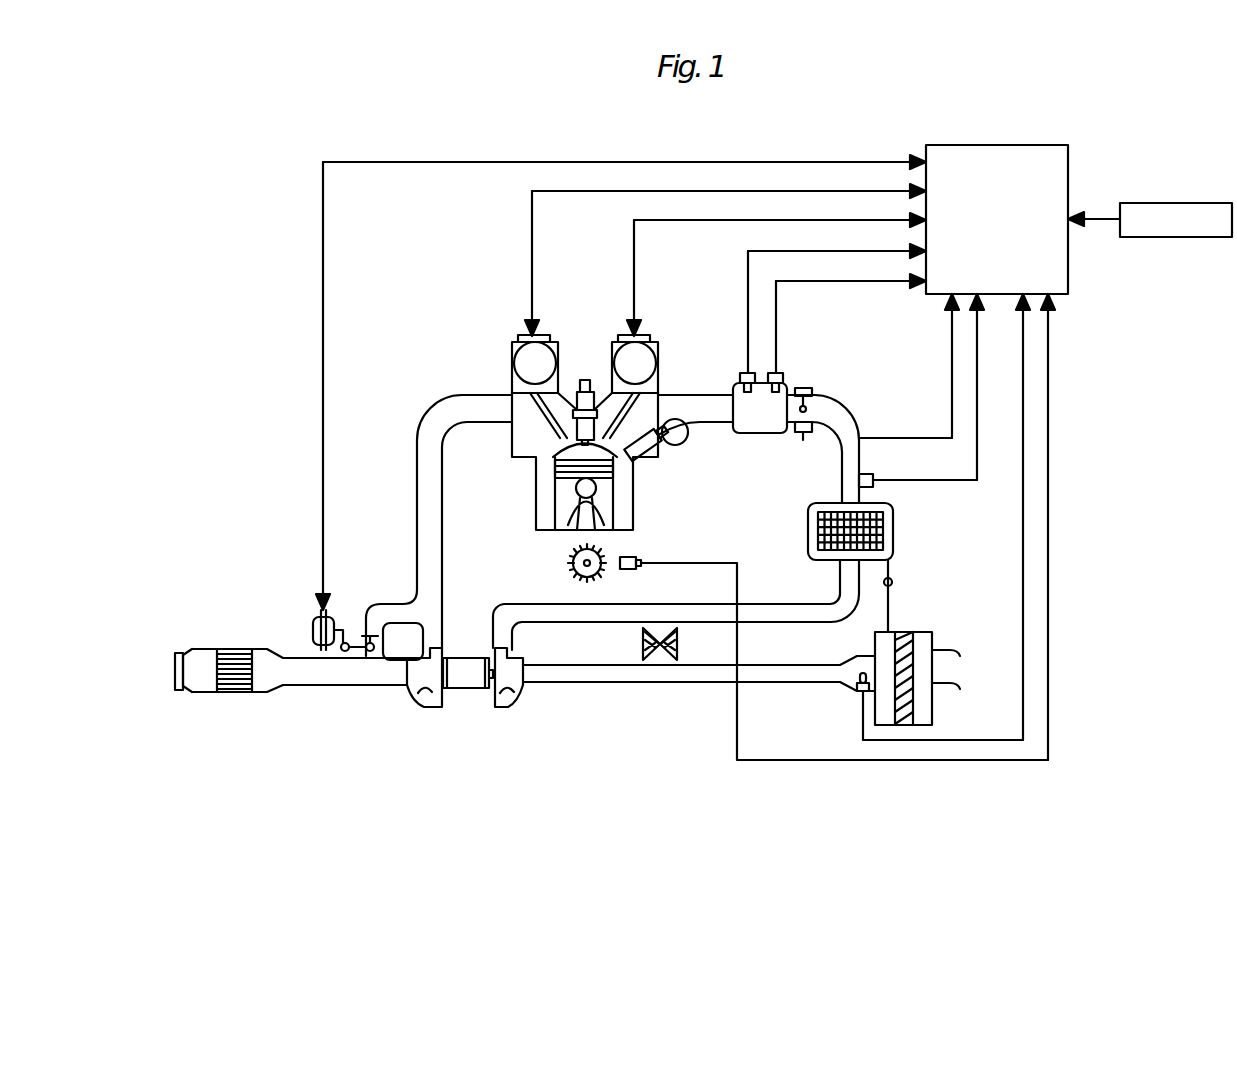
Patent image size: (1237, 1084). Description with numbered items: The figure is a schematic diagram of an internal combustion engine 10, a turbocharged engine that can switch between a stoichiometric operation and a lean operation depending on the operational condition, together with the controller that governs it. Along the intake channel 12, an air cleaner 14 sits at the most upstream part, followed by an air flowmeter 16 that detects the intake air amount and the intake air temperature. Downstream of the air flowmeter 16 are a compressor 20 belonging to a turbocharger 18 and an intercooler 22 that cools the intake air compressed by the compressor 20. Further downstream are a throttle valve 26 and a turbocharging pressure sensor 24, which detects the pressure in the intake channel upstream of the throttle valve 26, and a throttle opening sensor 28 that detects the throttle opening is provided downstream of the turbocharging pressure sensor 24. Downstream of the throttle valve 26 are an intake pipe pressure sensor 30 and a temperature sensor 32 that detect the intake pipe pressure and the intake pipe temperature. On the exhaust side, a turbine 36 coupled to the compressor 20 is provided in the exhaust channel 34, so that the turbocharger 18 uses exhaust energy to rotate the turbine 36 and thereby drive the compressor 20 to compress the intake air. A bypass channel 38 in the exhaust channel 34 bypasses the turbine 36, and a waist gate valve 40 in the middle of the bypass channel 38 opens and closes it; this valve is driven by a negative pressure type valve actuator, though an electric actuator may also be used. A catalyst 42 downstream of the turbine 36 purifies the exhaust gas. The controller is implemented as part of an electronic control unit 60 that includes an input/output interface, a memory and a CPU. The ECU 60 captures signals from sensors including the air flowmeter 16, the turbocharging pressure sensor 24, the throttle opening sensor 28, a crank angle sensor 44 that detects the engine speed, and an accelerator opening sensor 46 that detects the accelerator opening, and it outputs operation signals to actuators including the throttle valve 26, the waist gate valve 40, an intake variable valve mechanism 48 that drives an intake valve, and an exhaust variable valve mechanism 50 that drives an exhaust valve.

The internal combustion engine 10 is at (524, 487).
The intake channel 12 is at (602, 673).
The air cleaner 14 is at (933, 647).
The air flowmeter 16 is at (863, 700).
The turbocharger 18 is at (474, 710).
The compressor 20 is at (503, 685).
The intercooler 22 is at (895, 527).
The turbocharging pressure sensor 24 is at (873, 480).
The throttle valve 26 is at (813, 396).
The throttle opening sensor 28 is at (803, 440).
The intake pipe pressure sensor 30 is at (745, 374).
The temperature sensor 32 is at (780, 374).
The exhaust channel 34 is at (426, 420).
The turbine 36 is at (427, 690).
The bypass channel 38 is at (384, 623).
The waist gate valve (WGV) 40 is at (352, 631).
The catalyst 42 is at (232, 693).
The crank angle sensor 44 is at (644, 562).
The accelerator opening sensor 46 is at (1178, 203).
The intake variable valve mechanism 48 is at (628, 348).
The exhaust variable valve mechanism 50 is at (528, 348).
The electronic control unit (ECU) 60 is at (990, 145).